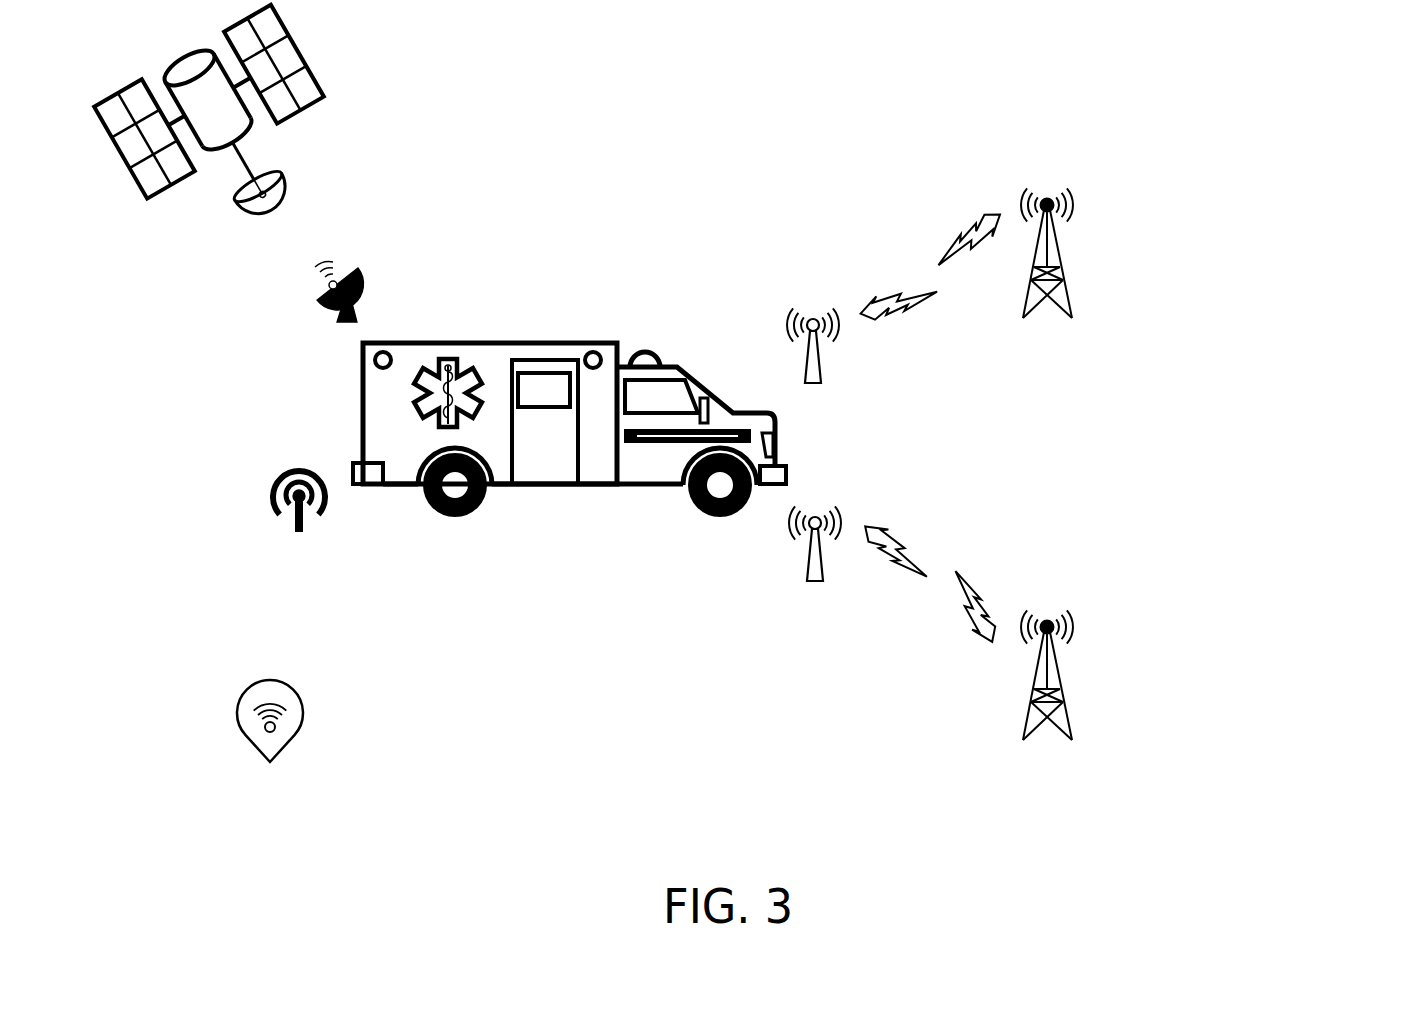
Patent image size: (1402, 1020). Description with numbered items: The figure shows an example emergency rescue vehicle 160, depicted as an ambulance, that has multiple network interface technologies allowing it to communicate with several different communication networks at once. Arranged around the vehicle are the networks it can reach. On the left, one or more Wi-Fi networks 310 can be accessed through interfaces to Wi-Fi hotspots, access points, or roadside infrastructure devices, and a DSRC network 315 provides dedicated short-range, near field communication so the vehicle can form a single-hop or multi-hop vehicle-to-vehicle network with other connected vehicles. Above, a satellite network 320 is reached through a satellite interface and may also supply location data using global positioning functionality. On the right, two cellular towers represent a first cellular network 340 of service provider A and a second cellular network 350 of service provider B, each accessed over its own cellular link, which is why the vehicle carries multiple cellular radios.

The emergency rescue vehicle (ERV) 160 is at (492, 336).
The Wi-Fi network 310 is at (269, 757).
The DSRC network 315 is at (295, 539).
The satellite network 320 is at (278, 133).
The cellular network (service provider A) 340 is at (1197, 242).
The cellular network (service provider B) 350 is at (1197, 664).